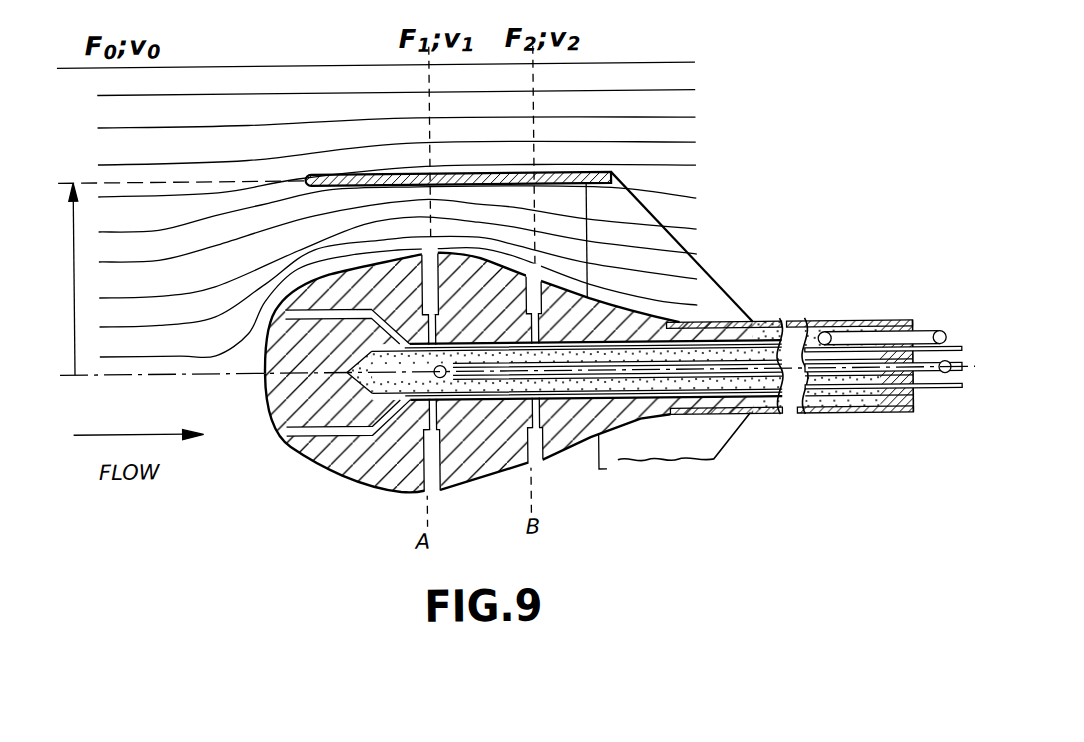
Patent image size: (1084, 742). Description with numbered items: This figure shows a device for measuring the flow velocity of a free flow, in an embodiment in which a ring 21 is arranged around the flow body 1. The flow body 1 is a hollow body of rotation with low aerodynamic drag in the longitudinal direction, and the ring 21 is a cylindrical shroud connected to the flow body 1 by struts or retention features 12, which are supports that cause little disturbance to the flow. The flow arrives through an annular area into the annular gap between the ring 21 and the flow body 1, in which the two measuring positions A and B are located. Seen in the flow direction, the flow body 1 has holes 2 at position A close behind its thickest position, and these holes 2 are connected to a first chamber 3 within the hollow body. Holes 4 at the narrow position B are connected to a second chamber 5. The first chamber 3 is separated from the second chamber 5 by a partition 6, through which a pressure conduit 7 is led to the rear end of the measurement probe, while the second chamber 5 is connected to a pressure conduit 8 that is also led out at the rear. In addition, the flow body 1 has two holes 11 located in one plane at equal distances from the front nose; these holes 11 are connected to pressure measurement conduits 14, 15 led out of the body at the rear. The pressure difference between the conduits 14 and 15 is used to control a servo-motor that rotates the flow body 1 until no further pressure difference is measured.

The flow body 1 is at (307, 399).
The holes 2 is at (432, 456).
The first chamber 3 is at (390, 381).
The holes 4 is at (532, 457).
The second chamber 5 is at (613, 382).
The partition 6 is at (477, 382).
The pressure conduit 7 is at (937, 381).
The pressure conduit 8 is at (922, 336).
The holes 11 is at (322, 309).
The struts 12 is at (708, 292).
The pressure measurement conduit 14 is at (953, 351).
The pressure measurement conduit 15 is at (940, 394).
The ring 21 is at (597, 172).